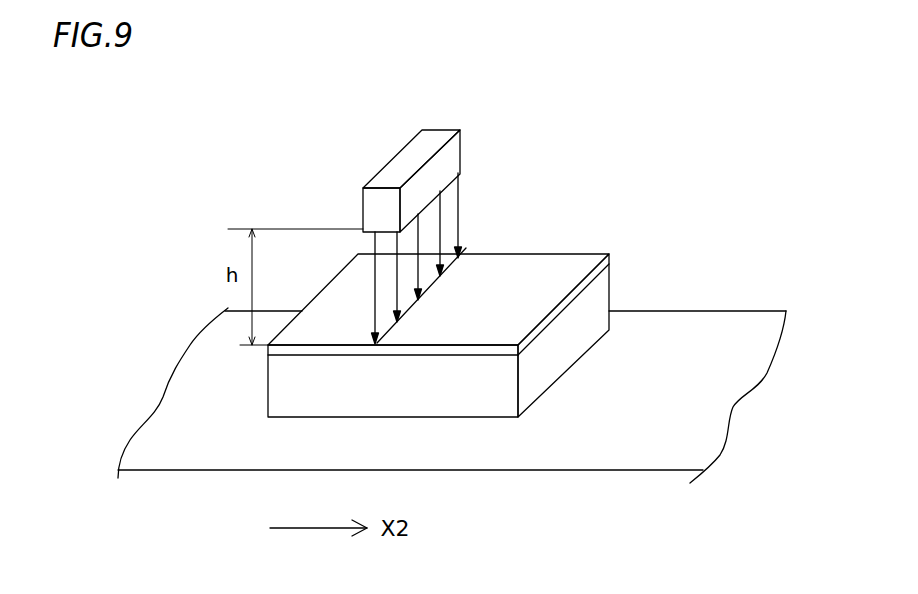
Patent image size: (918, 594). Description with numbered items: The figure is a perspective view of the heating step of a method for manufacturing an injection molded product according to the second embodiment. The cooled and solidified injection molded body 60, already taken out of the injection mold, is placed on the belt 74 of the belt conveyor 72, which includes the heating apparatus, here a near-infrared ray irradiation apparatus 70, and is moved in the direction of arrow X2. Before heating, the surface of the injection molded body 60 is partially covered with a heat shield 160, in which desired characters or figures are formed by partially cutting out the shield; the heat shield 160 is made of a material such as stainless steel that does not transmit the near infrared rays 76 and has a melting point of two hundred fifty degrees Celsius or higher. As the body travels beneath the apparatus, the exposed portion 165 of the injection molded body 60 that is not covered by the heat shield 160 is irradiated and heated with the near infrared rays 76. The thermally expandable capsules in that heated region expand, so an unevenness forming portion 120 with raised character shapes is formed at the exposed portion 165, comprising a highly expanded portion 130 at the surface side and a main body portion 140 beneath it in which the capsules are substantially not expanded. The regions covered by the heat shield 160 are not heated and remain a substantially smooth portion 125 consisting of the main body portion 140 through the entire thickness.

The near-infrared ray irradiation apparatus 70 is at (413, 160).
The near infrared rays 76 is at (462, 190).
The exposed portion 165 is at (316, 283).
The main body portion 140 is at (347, 283).
The smooth portion 125 is at (367, 283).
The highly expanded portion 130 is at (485, 272).
The unevenness forming portion 120 is at (523, 274).
The heat shield 160 is at (575, 272).
The injection molded body 60 is at (610, 277).
The belt 74 is at (747, 320).
The belt conveyor 72 is at (620, 471).